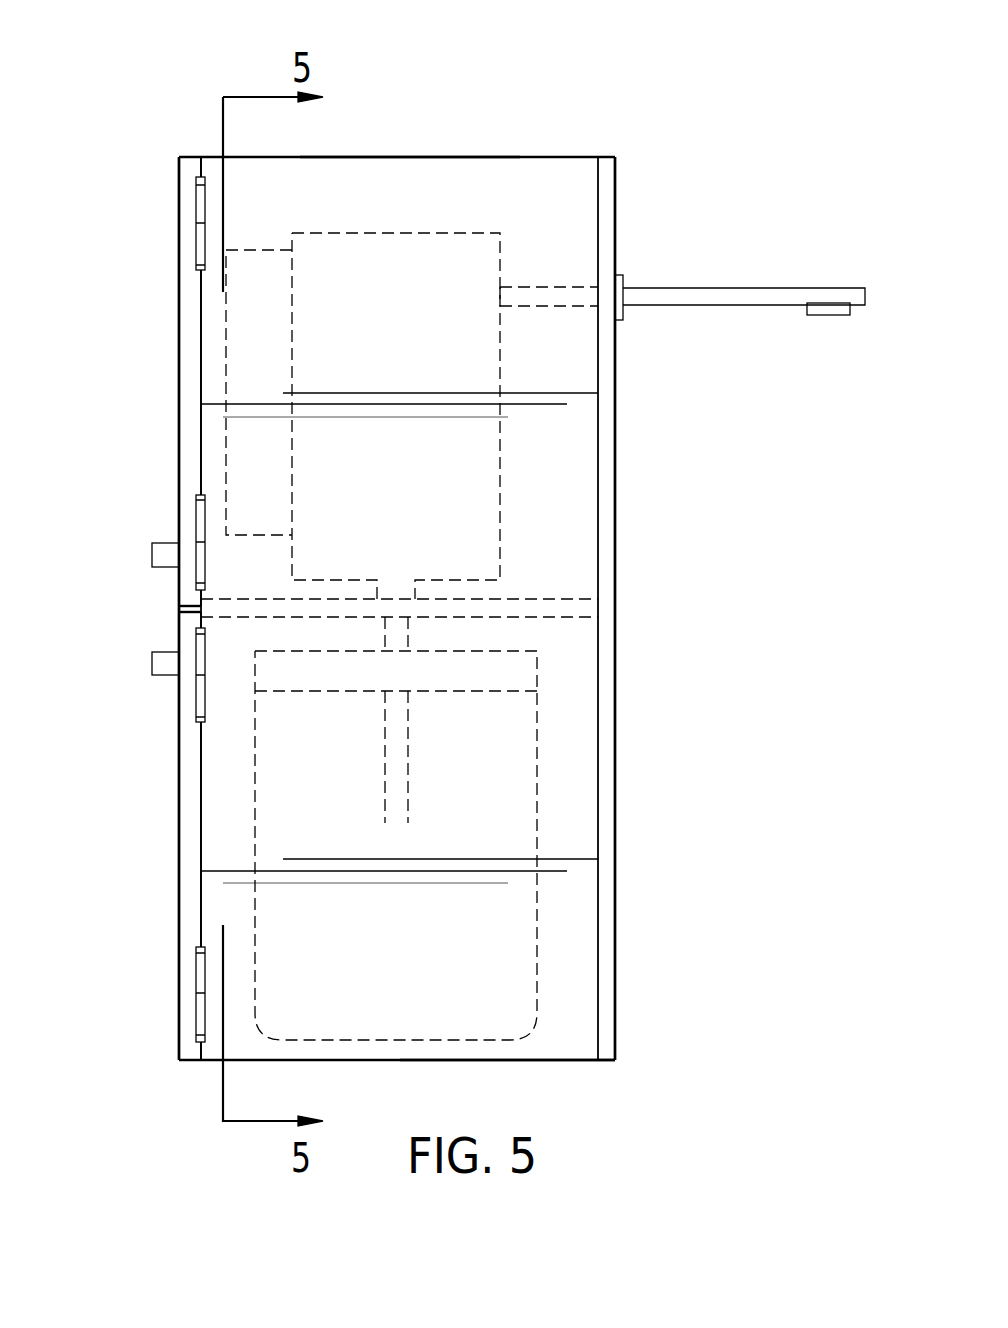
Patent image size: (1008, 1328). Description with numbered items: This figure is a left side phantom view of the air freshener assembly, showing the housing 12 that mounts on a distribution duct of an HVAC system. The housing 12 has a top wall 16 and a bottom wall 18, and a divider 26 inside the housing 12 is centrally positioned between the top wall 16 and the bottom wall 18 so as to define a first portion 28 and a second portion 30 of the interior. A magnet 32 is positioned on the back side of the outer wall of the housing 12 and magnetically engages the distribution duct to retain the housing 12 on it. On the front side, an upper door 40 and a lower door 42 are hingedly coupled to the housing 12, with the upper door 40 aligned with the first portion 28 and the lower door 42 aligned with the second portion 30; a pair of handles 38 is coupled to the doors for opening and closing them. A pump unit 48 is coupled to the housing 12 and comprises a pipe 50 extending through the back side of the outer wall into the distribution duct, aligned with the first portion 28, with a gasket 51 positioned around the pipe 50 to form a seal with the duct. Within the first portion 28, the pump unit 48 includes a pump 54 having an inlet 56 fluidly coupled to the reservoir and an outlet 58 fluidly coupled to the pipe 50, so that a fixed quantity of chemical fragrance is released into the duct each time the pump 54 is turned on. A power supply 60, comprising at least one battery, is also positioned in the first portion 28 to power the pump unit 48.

The housing 12 is at (526, 157).
The top wall 16 is at (410, 157).
The bottom wall 18 is at (536, 1060).
The divider 26 is at (573, 599).
The first portion 28 is at (246, 191).
The second portion 30 is at (220, 782).
The magnet 32 is at (615, 193).
The handles 38 is at (152, 663).
The upper door 40 is at (179, 297).
The lower door 42 is at (179, 934).
The pump unit 48 is at (566, 265).
The pipe 50 is at (768, 305).
The gasket 51 is at (623, 313).
The pump 54 is at (442, 233).
The inlet 56 is at (408, 640).
The outlet 58 is at (500, 287).
The power supply 60 is at (270, 250).